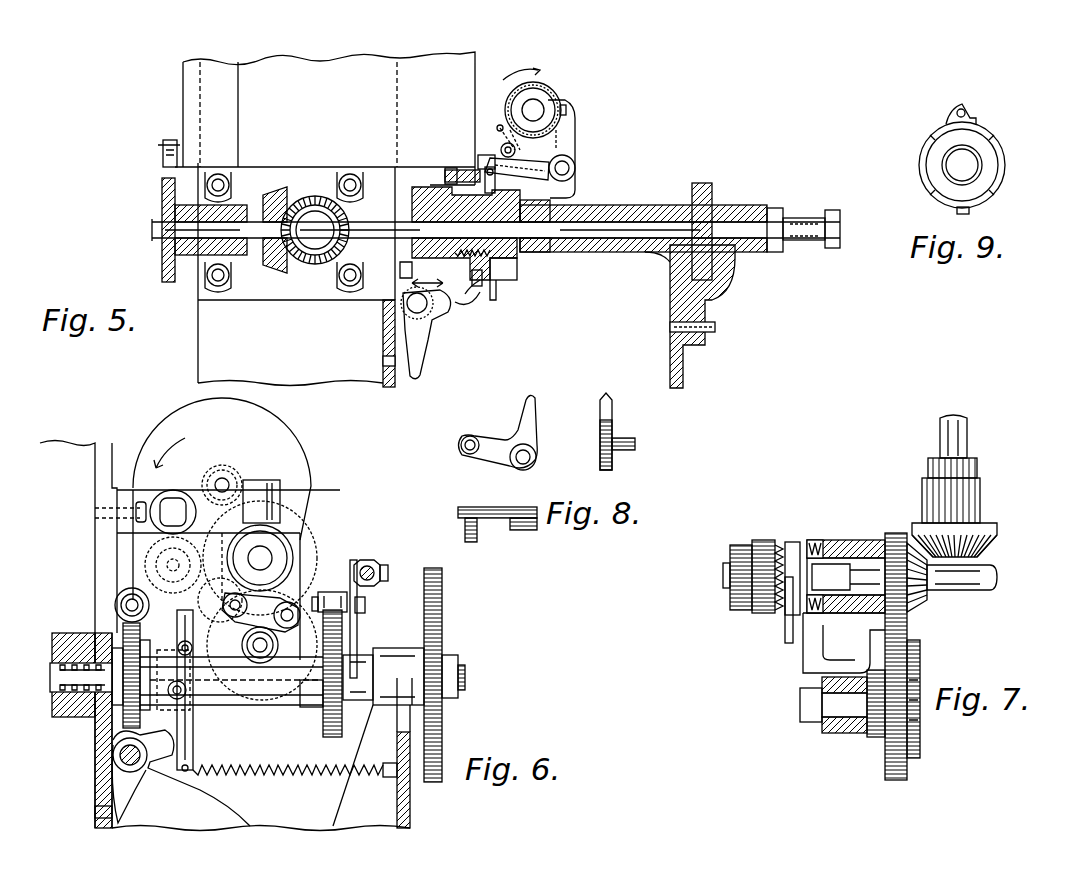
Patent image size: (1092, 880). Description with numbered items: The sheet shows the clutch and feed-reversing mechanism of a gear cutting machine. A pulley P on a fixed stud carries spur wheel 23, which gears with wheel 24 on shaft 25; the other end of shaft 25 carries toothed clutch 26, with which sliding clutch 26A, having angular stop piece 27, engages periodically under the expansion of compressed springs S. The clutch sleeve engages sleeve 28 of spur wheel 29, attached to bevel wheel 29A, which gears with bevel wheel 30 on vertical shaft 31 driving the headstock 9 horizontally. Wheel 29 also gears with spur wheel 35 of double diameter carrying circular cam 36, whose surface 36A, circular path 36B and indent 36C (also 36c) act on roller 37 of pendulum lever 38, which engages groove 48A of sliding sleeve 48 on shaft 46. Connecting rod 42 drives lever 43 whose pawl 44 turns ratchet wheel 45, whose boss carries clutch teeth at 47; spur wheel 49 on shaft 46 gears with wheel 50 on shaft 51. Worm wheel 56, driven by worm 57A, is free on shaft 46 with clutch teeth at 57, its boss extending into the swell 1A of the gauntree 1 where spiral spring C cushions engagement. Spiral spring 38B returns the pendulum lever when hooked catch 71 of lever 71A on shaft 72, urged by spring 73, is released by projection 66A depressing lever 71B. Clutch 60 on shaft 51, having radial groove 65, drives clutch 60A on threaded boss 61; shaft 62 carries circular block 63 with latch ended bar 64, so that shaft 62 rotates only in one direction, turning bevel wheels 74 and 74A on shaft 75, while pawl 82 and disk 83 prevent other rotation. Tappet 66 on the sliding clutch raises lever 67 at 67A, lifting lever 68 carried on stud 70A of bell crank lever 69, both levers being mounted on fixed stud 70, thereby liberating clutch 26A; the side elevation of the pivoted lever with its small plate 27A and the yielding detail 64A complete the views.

In FIG. 6, the gauntree 1 is at (95, 524).
In FIG. 6, the outward swell of gauntree 1A is at (52, 645).
In FIG. 5, the headstock 9 is at (480, 147).
In FIG. 6, the spur wheel 23 is at (232, 480).
In FIG. 6, the wheel 24 is at (282, 500).
In FIG. 5, the shaft 25 is at (520, 100).
In FIG. 7, the shaft 25 is at (997, 577).
In FIG. 7, the toothed clutch 26 is at (740, 545).
In FIG. 5, the sliding clutch 26A is at (545, 95).
In FIG. 7, the sliding clutch 26A is at (775, 536).
In FIG. 5, the angular projecting stop piece 27 is at (566, 110).
In FIG. 7, the angular projecting stop piece 27 is at (794, 542).
In FIG. 6, the gear 27A is at (302, 540).
In FIG. 7, the sleeve of spur wheel 28 is at (846, 576).
In FIG. 7, the spur wheel 29 is at (893, 533).
In FIG. 7, the bevel wheel 29A is at (925, 601).
In FIG. 7, the bevel wheel 30 is at (997, 530).
In FIG. 7, the vertical shaft 31 is at (967, 437).
In FIG. 7, the spur wheel 35 is at (908, 628).
In FIG. 6, the spur wheel 35 is at (310, 707).
In FIG. 7, the circular cam 36 is at (920, 660).
In FIG. 6, the circular cam 36 is at (210, 600).
In FIG. 6, the surface of circular cam 36A is at (290, 638).
In FIG. 6, the circular path of cam 36B is at (262, 665).
In FIG. 6, the indent of circular cam 36C is at (248, 660).
In FIG. 7, the indent of circular cam 36c is at (916, 705).
In FIG. 6, the roller 37 is at (173, 593).
In FIG. 6, the pendulum lever 38 is at (180, 733).
In FIG. 6, the spiral spring 38B is at (304, 770).
In FIG. 6, the connecting rod 42 is at (376, 566).
In FIG. 6, the lever 43 is at (357, 560).
In FIG. 6, the pawl 44 is at (332, 592).
In FIG. 6, the ratchet wheel 45 is at (334, 737).
In FIG. 6, the shaft 46 is at (50, 672).
In FIG. 6, the clutch teeth 47 is at (268, 706).
In FIG. 6, the sliding sleeve 48 is at (240, 706).
In FIG. 6, the groove 48A is at (183, 715).
In FIG. 6, the spur wheel 49 is at (434, 568).
In FIG. 5, the wheel 50 is at (702, 184).
In FIG. 5, the shaft 51 is at (640, 222).
In FIG. 6, the worm wheel 56 is at (123, 728).
In FIG. 6, the clutch teeth 57 is at (180, 643).
In FIG. 6, the worm 57A is at (115, 603).
In FIG. 5, the clutch 60 is at (545, 205).
In FIG. 5, the clutch 60A is at (404, 280).
In FIG. 9, the clutch 60A is at (1006, 166).
In FIG. 5, the threaded boss 61 is at (405, 262).
In FIG. 5, the shaft 62 is at (152, 229).
In FIG. 5, the circular block 63 is at (462, 190).
In FIG. 5, the latch ended yielding bar 64 is at (484, 278).
In FIG. 5, the spring 64A is at (486, 290).
In FIG. 5, the radial groove 65 is at (512, 263).
In FIG. 5, the tappet 66 is at (548, 176).
In FIG. 9, the tappet 66 is at (972, 112).
In FIG. 5, the projection of clutch 66A is at (493, 300).
In FIG. 9, the projection of clutch 66A is at (957, 211).
In FIG. 5, the lever 67 is at (501, 149).
In FIG. 5, the part of lever 67 67A is at (478, 160).
In FIG. 5, the lever 68 is at (500, 128).
In FIG. 5, the bell crank lever 69 is at (576, 133).
In FIG. 8, the bell crank lever 69 is at (513, 434).
In FIG. 7, the bell crank lever 69 is at (785, 630).
In FIG. 6, the bell crank lever 69 is at (261, 612).
In FIG. 5, the fixed stud 70 is at (576, 166).
In FIG. 5, the stud 70A is at (488, 165).
In FIG. 8, the stud 70A is at (468, 452).
In FIG. 6, the stud 70A is at (229, 562).
In FIG. 6, the hooked catch 71 is at (150, 770).
In FIG. 5, the lever 71A is at (421, 355).
In FIG. 6, the lever 71A is at (118, 790).
In FIG. 5, the lever 71B is at (490, 290).
In FIG. 5, the shaft 72 is at (428, 312).
In FIG. 6, the shaft 72 is at (138, 772).
In FIG. 5, the spring 73 is at (383, 362).
In FIG. 6, the spring 73 is at (95, 813).
In FIG. 5, the bevel wheel 74 is at (276, 273).
In FIG. 5, the bevel wheel 74A is at (312, 196).
In FIG. 5, the shaft 75 is at (315, 264).
In FIG. 5, the pawl 82 is at (160, 158).
In FIG. 5, the disk 83 is at (162, 190).
In FIG. 6, the spiral spring C is at (60, 690).
In FIG. 6, the pulley P is at (310, 462).
In FIG. 7, the springs S is at (818, 540).